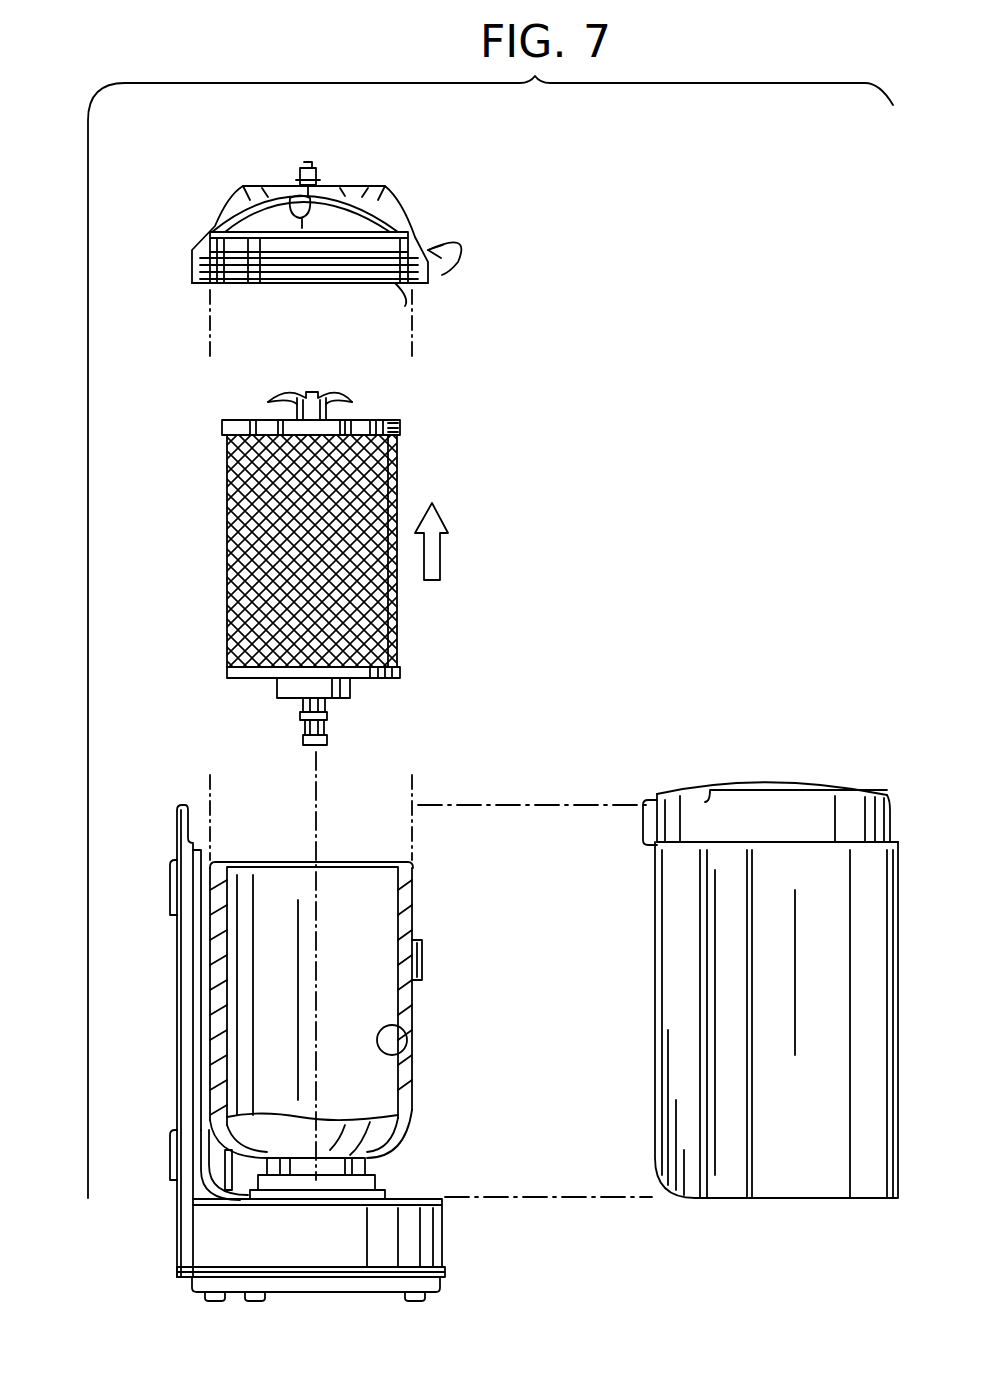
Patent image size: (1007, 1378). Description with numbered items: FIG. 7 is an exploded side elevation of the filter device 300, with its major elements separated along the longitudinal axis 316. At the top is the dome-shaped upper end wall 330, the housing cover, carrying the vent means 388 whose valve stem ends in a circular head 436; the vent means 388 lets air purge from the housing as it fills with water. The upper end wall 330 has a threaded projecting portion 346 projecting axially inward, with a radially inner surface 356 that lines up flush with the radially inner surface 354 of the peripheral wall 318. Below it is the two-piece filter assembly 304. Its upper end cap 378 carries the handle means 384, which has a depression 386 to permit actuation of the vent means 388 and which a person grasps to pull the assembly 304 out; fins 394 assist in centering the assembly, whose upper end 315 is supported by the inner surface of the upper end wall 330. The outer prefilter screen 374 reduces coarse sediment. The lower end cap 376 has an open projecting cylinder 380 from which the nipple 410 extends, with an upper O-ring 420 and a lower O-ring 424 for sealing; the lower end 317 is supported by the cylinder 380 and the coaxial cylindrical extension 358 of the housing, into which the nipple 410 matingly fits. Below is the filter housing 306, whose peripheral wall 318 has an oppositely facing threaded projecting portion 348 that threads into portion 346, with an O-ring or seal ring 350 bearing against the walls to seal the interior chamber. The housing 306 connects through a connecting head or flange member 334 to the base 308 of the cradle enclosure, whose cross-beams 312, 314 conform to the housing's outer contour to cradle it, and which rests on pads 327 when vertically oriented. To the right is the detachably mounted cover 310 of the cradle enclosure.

The filter device 300 is at (815, 265).
The upper end wall 330 is at (395, 212).
The vent means 388 is at (325, 178).
The circular head 436 is at (290, 200).
The radially inner surface 356 is at (272, 284).
The threaded projecting portion 346 is at (405, 296).
The filter assembly 304 is at (321, 530).
The depression 386 is at (312, 392).
The handle means 384 is at (350, 395).
The upper end 315 is at (250, 420).
The spacers or fins 394 is at (370, 412).
The prefilter porous layer or screen 374 is at (227, 550).
The upper end cap 378 is at (227, 435).
The lower end 317 is at (227, 676).
The lower end cap 376 is at (400, 675).
The open projecting cylinder 380 is at (350, 690).
The upper O-ring 420 is at (303, 705).
The lower O-ring 424 is at (300, 732).
The nipple 410 is at (327, 730).
The longitudinal axis 316 is at (315, 780).
The filter housing 306 is at (371, 1004).
The O-ring or seal ring 350 is at (360, 862).
The threaded projecting portion 348 is at (415, 890).
The peripheral wall 318 is at (410, 920).
The radially inner surface 354 is at (405, 1060).
The connecting head or flange member 334 is at (390, 1185).
The cross-beam 312 is at (200, 965).
The cross-beam 314 is at (212, 1145).
The base 308 is at (308, 1258).
The coaxial cylindrical extension 358 is at (290, 1205).
The pads 327 is at (215, 1301).
The cover 310 is at (770, 1045).